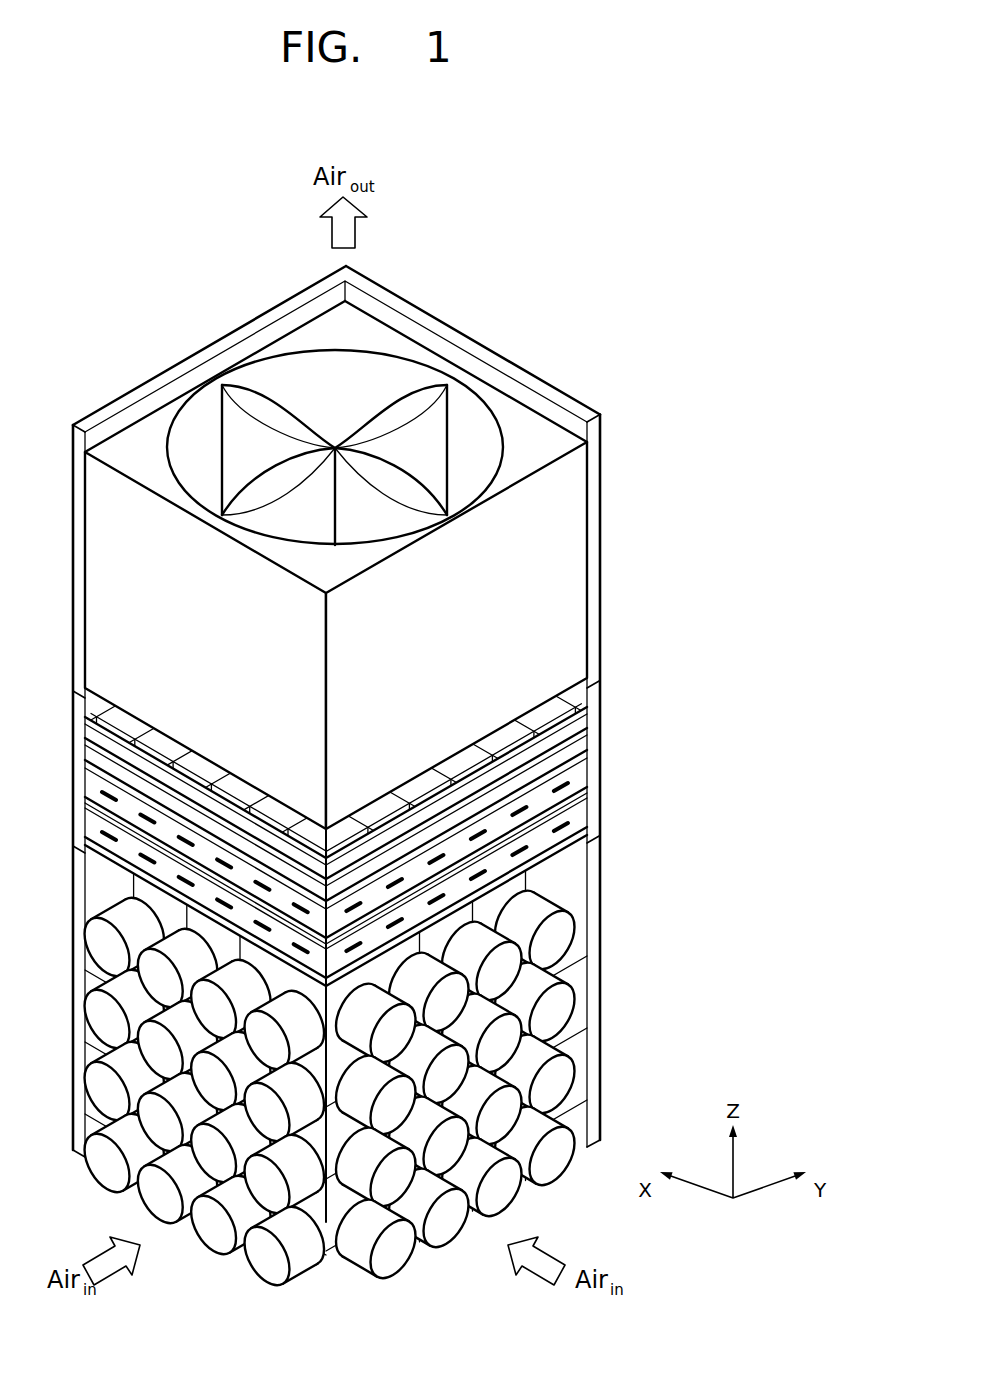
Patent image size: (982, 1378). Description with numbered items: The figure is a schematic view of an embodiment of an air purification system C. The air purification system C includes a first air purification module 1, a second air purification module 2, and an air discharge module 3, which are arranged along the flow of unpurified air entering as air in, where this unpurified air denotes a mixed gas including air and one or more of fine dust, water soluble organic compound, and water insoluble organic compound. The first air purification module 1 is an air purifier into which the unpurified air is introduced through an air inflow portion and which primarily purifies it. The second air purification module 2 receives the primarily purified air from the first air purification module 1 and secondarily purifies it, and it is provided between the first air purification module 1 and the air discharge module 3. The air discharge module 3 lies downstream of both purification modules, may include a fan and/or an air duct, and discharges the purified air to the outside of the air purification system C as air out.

The first air purification module 1 is at (607, 850).
The second air purification module 2 is at (607, 690).
The air discharge module 3 is at (607, 417).
The air purification system C is at (632, 366).